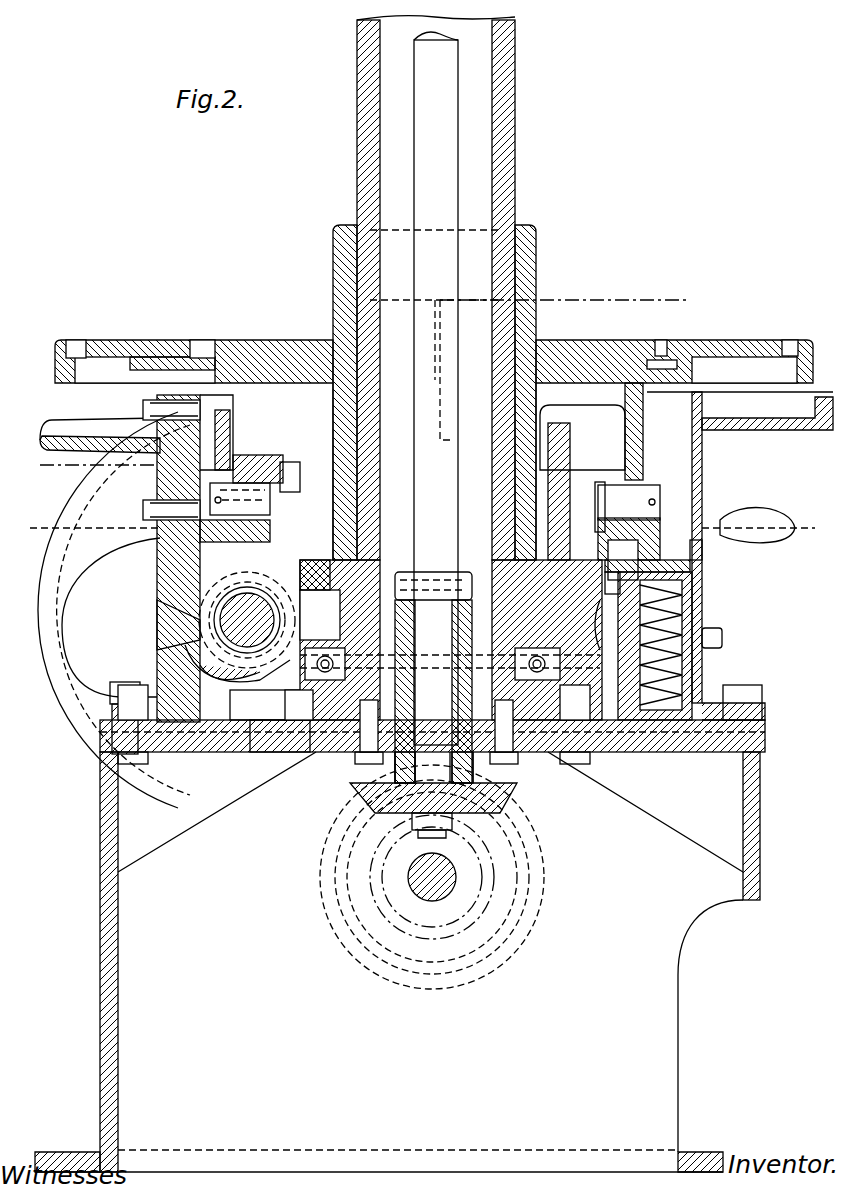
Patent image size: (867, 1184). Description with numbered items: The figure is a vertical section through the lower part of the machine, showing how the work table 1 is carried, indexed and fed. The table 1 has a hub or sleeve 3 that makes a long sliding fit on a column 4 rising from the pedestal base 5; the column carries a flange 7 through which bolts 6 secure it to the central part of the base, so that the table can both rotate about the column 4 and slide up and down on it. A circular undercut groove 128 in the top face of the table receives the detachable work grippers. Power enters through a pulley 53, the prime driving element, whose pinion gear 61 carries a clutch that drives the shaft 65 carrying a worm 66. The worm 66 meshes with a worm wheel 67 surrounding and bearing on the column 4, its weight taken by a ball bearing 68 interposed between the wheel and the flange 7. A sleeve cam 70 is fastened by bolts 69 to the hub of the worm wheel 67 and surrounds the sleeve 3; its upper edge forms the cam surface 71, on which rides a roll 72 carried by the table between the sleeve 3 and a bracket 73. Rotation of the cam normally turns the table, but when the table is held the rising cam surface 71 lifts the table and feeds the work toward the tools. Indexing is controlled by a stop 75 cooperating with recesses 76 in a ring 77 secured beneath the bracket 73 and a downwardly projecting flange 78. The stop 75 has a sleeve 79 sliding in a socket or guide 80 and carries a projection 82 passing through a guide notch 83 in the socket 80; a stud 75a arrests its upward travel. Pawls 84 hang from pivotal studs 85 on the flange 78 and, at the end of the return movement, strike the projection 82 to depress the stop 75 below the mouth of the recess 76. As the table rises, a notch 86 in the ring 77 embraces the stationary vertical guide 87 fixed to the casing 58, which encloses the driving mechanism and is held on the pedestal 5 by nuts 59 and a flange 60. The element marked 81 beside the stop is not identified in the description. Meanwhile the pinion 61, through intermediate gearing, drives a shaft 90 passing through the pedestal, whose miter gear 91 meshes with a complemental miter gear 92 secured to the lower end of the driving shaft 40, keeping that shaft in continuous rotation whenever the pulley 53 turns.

The table 1 is at (730, 340).
The hub or sleeve 3 is at (536, 330).
The column 4 is at (515, 160).
The pedestal base 5 is at (62, 828).
The bolts 6 is at (300, 700).
The flange 7 is at (600, 752).
The driving shaft 40 is at (428, 162).
The pulley 53 is at (60, 690).
The casing 58 is at (157, 600).
The nuts 59 is at (157, 640).
The flange 60 is at (110, 700).
The pinion gear 61 is at (235, 664).
The shaft 65 is at (247, 612).
The worm 66 is at (231, 611).
The worm wheel 67 is at (461, 617).
The ball bearing 68 is at (450, 677).
The bolts 69 is at (586, 504).
The sleeve cam 70 is at (608, 432).
The cam surface 71 is at (560, 430).
The roll 72 is at (258, 476).
The bracket 73 is at (240, 450).
The stop 75 is at (690, 566).
The stud 75a is at (735, 510).
The recesses 76 is at (650, 538).
The ring 77 is at (702, 528).
The flange 78 is at (630, 485).
The sleeve 79 is at (700, 610).
The socket or guide 80 is at (702, 660).
The spring 81 is at (606, 625).
The projection 82 is at (596, 588).
The guide notch 83 is at (702, 560).
The pawls 84 is at (645, 482).
The pivotal studs 85 is at (606, 437).
The notch 86 is at (157, 570).
The stationary vertical guide 87 is at (157, 500).
The shaft 90 is at (430, 900).
The miter gear 91 is at (535, 898).
The complemental miter gear 92 is at (512, 800).
The circular undercut groove 128 is at (660, 340).